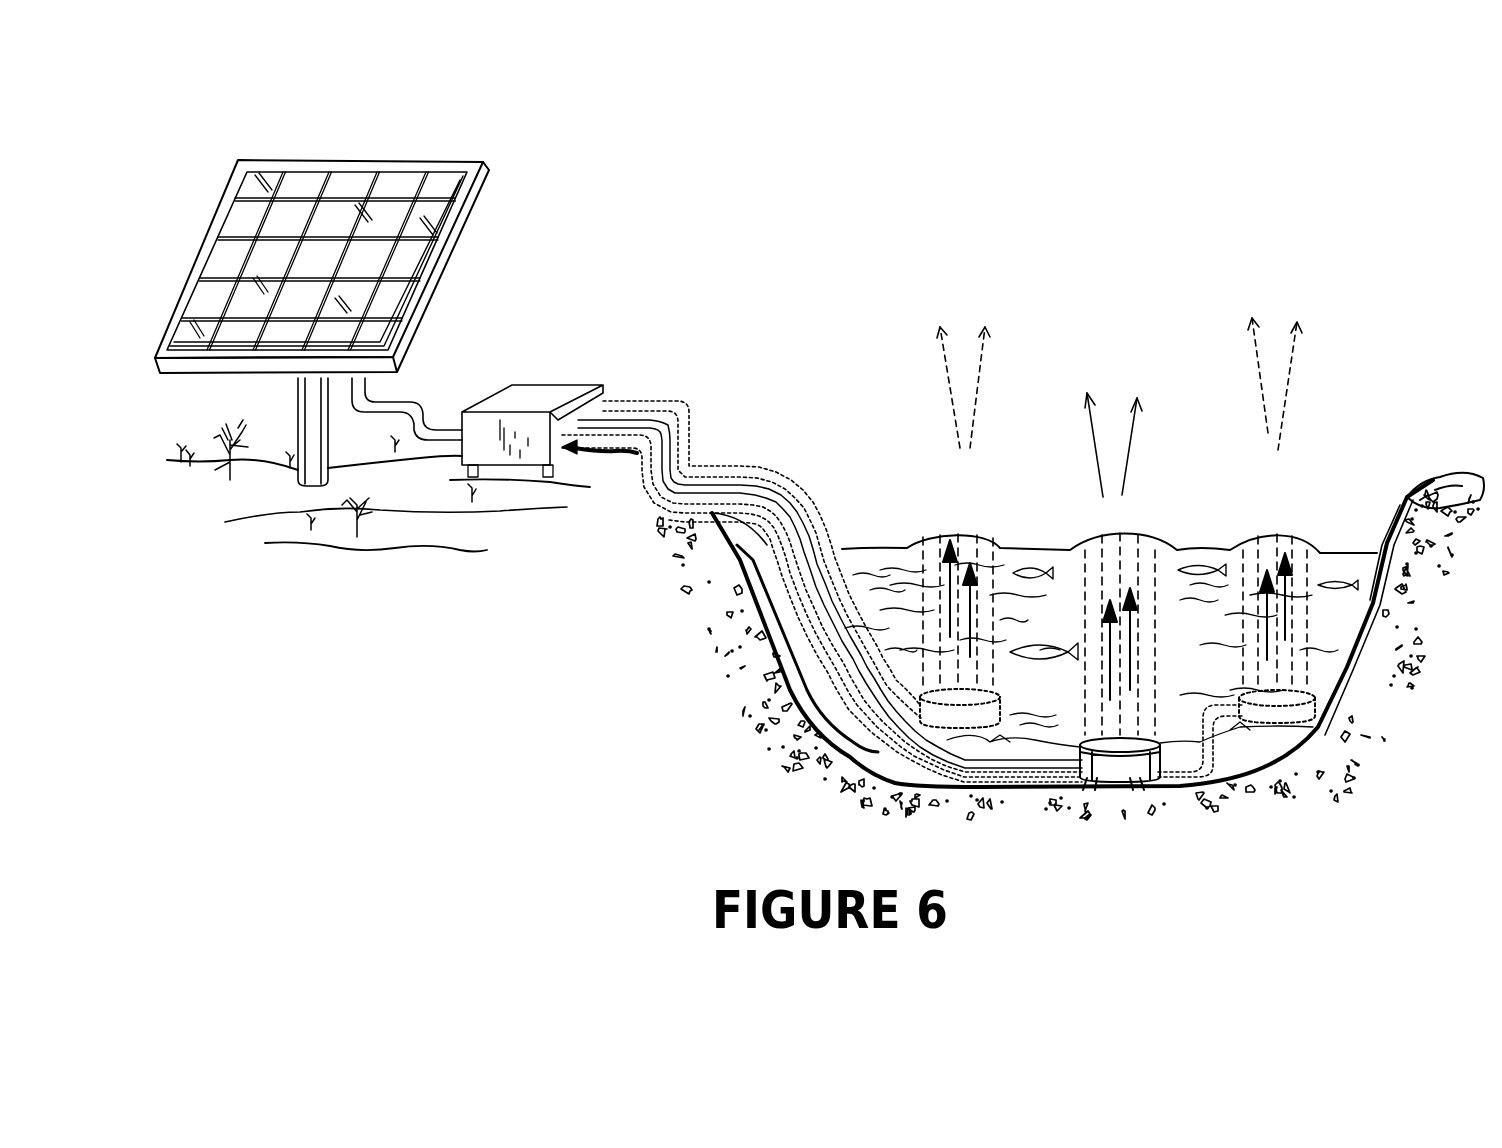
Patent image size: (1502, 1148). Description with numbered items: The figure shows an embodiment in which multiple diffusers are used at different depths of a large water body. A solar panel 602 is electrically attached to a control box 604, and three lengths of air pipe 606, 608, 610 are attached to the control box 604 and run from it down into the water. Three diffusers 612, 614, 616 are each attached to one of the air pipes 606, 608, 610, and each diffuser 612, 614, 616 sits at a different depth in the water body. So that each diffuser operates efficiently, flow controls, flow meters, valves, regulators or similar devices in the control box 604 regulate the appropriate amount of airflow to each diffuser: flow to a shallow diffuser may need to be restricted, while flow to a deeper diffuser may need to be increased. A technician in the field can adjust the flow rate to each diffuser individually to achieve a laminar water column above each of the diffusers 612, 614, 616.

The solar panel 602 is at (433, 160).
The control box 604 is at (561, 396).
The air pipe 606 is at (648, 403).
The air pipe 608 is at (690, 473).
The air pipe 610 is at (590, 445).
The diffuser 612 is at (962, 725).
The diffuser 614 is at (1117, 778).
The diffuser 616 is at (1275, 724).